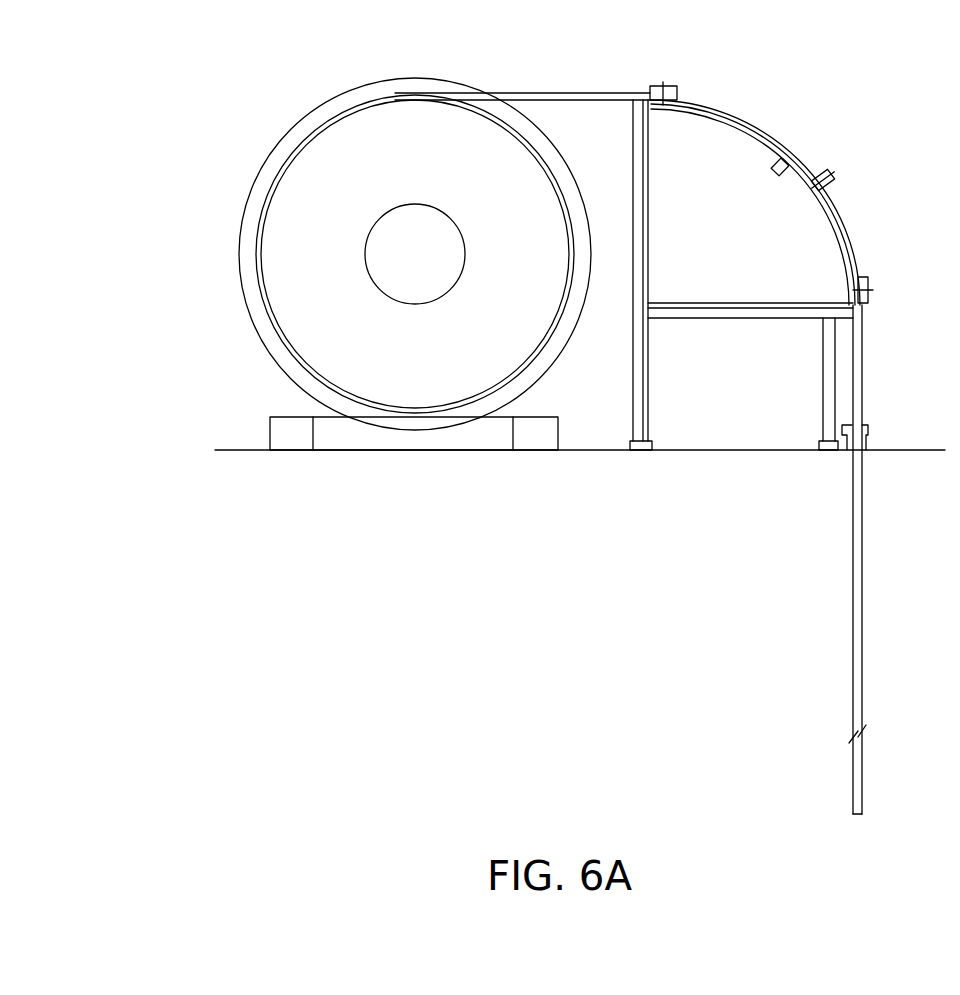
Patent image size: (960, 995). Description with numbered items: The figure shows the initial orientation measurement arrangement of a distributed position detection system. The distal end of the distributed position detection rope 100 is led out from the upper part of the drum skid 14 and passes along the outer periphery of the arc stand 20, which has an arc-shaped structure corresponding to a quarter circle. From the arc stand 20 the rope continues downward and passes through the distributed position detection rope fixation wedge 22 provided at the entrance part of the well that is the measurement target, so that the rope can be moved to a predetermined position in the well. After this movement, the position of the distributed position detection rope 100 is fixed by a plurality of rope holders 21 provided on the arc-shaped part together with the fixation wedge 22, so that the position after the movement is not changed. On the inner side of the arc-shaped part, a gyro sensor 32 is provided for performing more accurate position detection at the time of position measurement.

The drum skid 14 is at (392, 264).
The distributed position detection rope 100 is at (666, 422).
The arc stand 20 is at (755, 202).
The rope holders 21 is at (761, 169).
The gyro sensor 32 is at (776, 203).
The distributed position detection rope fixation wedge 22 is at (889, 559).